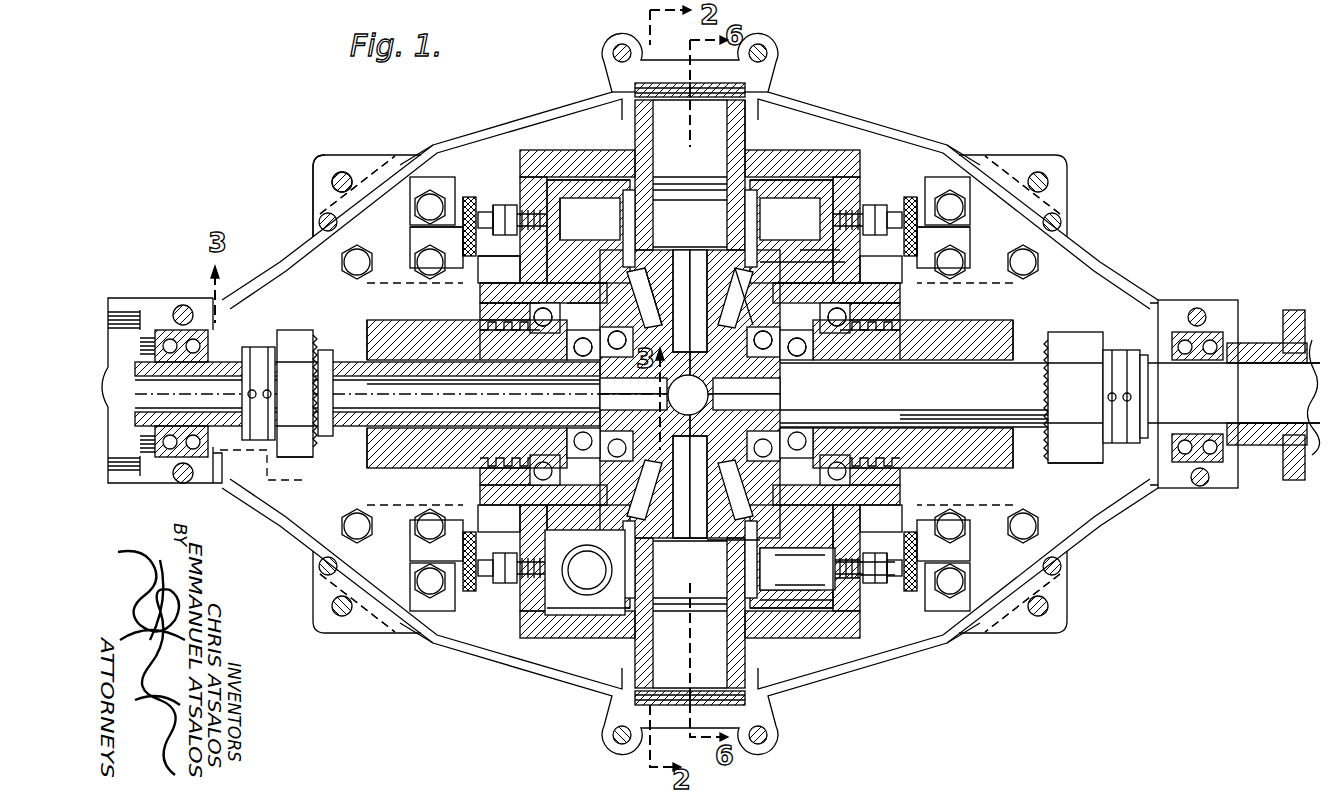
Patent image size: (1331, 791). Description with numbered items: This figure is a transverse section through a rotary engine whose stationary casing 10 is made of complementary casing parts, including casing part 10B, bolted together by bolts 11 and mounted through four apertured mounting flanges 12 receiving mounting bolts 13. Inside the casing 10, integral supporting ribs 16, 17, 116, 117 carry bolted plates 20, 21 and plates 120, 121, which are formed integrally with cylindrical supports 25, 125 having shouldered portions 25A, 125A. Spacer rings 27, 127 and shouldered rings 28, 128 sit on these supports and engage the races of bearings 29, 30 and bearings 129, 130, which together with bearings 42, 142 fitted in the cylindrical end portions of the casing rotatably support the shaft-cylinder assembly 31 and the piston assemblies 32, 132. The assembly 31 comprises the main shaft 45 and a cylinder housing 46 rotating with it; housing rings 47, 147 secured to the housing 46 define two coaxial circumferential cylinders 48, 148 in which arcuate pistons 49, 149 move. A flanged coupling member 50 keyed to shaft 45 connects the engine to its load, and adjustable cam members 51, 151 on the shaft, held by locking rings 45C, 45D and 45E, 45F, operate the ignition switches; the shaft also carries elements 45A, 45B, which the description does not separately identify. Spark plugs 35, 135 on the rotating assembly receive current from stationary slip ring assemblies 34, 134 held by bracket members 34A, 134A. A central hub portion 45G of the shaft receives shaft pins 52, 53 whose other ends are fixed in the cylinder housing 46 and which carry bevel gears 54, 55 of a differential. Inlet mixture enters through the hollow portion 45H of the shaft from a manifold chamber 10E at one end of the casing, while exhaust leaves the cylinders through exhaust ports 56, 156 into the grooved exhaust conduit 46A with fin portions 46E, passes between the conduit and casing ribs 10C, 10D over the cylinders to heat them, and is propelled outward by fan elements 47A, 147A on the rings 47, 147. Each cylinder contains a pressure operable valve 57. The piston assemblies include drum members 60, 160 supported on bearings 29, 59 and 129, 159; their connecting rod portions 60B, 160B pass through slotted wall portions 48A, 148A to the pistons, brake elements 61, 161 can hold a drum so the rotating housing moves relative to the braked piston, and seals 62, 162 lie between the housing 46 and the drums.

The housing or casing 10 is at (929, 133).
The casing part 10B is at (1095, 254).
The casing rib portion 10C is at (592, 102).
The casing rib portion 10D is at (795, 112).
The enlarged chamber 10E is at (113, 312).
The bolts 11 is at (320, 224).
The mounting flanges 12 is at (313, 182).
The mounting bolts 13 is at (345, 175).
The supporting rib 16 is at (432, 162).
The supporting rib 17 is at (446, 634).
The supporting rib 116 is at (938, 167).
The supporting rib 117 is at (937, 634).
The plate 20 is at (390, 162).
The plate 21 is at (390, 634).
The plate 120 is at (985, 162).
The plate 121 is at (995, 634).
The cylindrical support 25 is at (390, 468).
The cylindrical support 125 is at (955, 468).
The shouldered portion 25A is at (490, 445).
The shouldered portion 125A is at (893, 431).
The spacer ring 27 is at (497, 342).
The spacer ring 127 is at (885, 359).
The ring 28 is at (543, 330).
The ring 128 is at (838, 330).
The bearing 29 is at (618, 352).
The bearing 129 is at (766, 352).
The bearing 30 is at (584, 358).
The bearing 130 is at (797, 358).
The shaft-cylinder assembly 31 is at (788, 160).
The piston assembly 32 is at (587, 182).
The piston assembly 132 is at (805, 602).
The slip ring assembly 34 is at (468, 195).
The slip ring assembly 134 is at (910, 200).
The bracket member 34A is at (410, 242).
The bracket member 134A is at (970, 242).
The spark plug 35 is at (493, 207).
The spark plug 135 is at (890, 585).
The bearing 42 is at (170, 460).
The bearing 142 is at (1222, 454).
The main shaft 45 is at (1050, 395).
The shaft hub 45A is at (320, 352).
The shaft hub 45B is at (1053, 357).
The locking ring 45C is at (254, 356).
The locking ring 45D is at (286, 347).
The locking ring 45E is at (1118, 447).
The locking ring 45F is at (1108, 452).
The enlarged hub portion 45G is at (740, 414).
The hollow portion 45H is at (407, 394).
The cylinder housing 46 is at (555, 645).
The annular enlarged grooved portion 46A is at (760, 132).
The internal spaced fin portions 46E is at (704, 107).
The housing ring 47 is at (530, 150).
The housing ring 147 is at (852, 150).
The fan elements 47A is at (505, 150).
The fan elements 147A is at (898, 127).
The cylinder 48 is at (577, 635).
The cylinder 148 is at (782, 620).
The slotted wall portion 48A is at (588, 302).
The slotted wall portion 148A is at (827, 569).
The piston 49 is at (579, 219).
The piston 149 is at (765, 602).
The annular flanged coupling member 50 is at (1294, 340).
The cam member 51 is at (305, 457).
The cam member 151 is at (1085, 467).
The shaft pin 52 is at (680, 320).
The shaft pin 53 is at (680, 500).
The gear 54 is at (753, 270).
The gear 55 is at (687, 551).
The housing apertured portion 56 is at (655, 210).
The pressure operable valve 57 is at (590, 550).
The housing apertured portion 156 is at (723, 559).
The bearing 59 is at (520, 296).
The bearing 159 is at (870, 298).
The drum member 60 is at (492, 262).
The drum member 160 is at (813, 272).
The connecting rod portion 60B is at (480, 298).
The connecting rod portion 160B is at (910, 298).
The brake element 61 is at (480, 316).
The brake element 161 is at (910, 316).
The seal 62 is at (650, 262).
The seal 162 is at (792, 252).